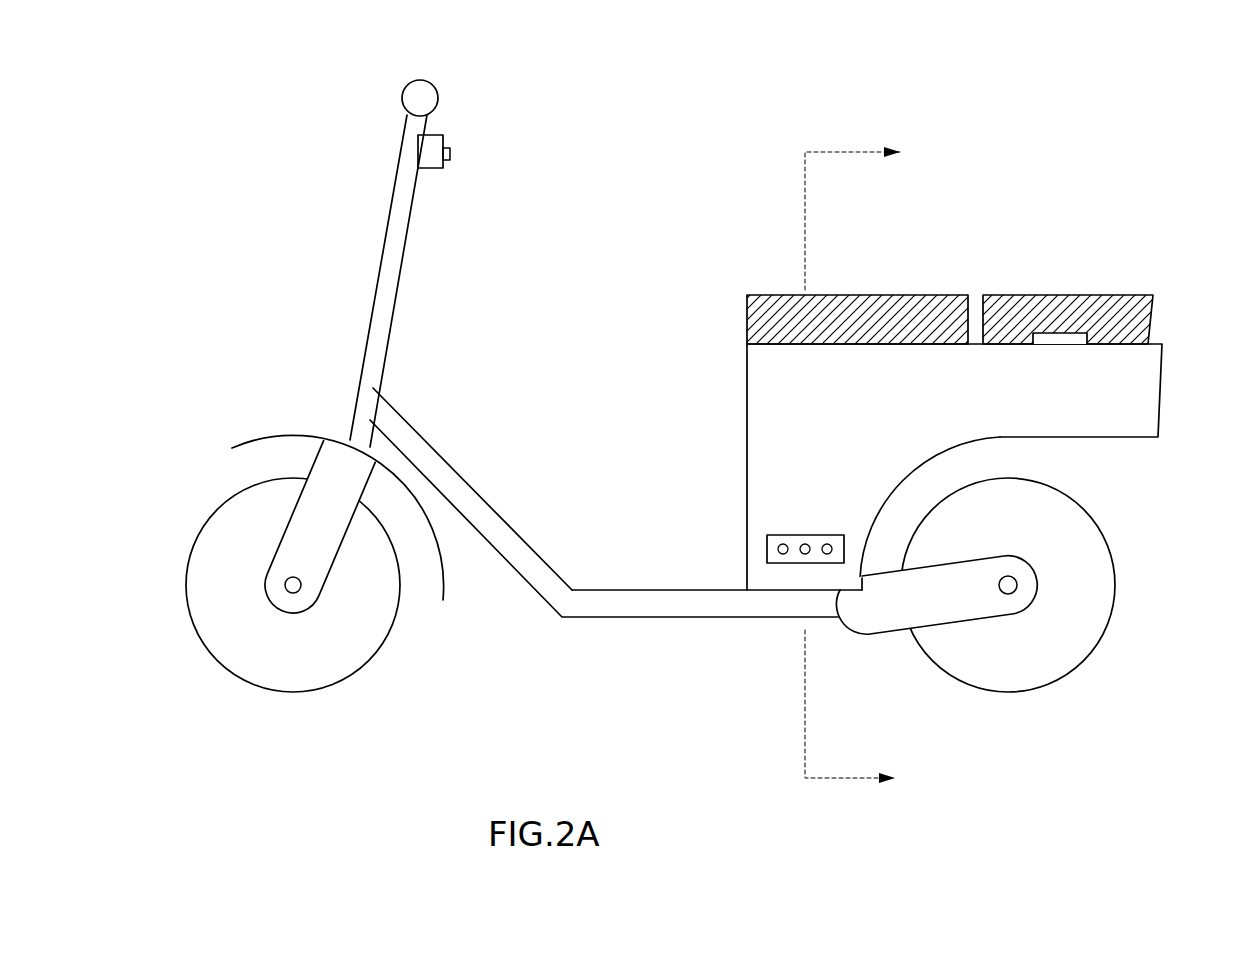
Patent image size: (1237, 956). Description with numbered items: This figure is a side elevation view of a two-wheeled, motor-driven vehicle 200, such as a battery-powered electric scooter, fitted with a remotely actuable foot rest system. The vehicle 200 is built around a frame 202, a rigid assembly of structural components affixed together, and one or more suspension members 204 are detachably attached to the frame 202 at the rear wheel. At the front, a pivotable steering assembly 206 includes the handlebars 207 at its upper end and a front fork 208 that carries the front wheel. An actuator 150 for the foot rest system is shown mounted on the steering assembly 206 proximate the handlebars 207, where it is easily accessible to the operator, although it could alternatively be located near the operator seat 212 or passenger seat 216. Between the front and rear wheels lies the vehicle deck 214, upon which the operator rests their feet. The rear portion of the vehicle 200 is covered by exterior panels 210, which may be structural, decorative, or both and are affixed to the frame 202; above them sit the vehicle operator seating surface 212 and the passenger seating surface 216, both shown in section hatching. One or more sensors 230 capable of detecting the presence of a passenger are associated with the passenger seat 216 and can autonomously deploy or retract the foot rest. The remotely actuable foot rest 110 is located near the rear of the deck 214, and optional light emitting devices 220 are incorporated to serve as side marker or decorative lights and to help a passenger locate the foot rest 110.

The motor-driven vehicle 200 is at (1118, 102).
The handlebars 207 is at (408, 84).
The actuator 150 is at (447, 140).
The pivotable steering assembly 206 is at (402, 248).
The front fork 208 is at (293, 548).
The frame 202 is at (630, 618).
The vehicle deck 214 is at (615, 590).
The exterior panels 210 is at (1123, 402).
The vehicle operator seating surface 212 is at (875, 294).
The passenger seating surface 216 is at (1078, 294).
The sensors 230 is at (1092, 340).
The light emitting devices 220 is at (800, 540).
The remotely actuable foot rest 110 is at (838, 600).
The suspension members 204 is at (990, 572).